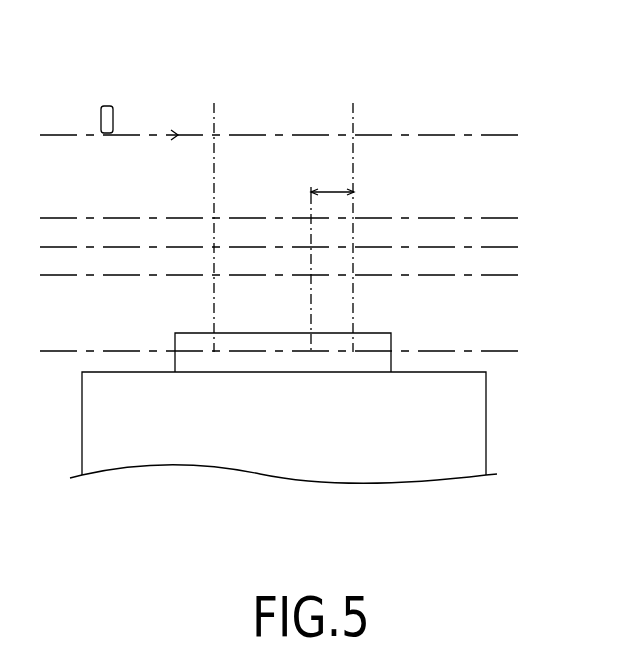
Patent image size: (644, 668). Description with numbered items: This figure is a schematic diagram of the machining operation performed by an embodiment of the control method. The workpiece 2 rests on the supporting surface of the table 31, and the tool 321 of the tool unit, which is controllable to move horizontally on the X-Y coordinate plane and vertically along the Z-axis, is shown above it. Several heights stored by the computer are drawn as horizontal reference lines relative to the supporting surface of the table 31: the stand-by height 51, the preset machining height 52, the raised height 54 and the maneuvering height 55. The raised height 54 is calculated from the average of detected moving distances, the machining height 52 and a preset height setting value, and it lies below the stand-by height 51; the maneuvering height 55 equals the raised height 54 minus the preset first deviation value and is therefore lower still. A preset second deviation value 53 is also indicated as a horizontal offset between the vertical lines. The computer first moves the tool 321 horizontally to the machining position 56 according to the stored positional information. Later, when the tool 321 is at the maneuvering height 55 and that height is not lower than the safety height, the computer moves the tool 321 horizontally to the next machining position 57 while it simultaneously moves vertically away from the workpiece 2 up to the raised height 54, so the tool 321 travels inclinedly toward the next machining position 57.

The tool 321 is at (107, 121).
The machining position 56 is at (214, 120).
The next machining position 57 is at (353, 120).
The preset second deviation value 53 is at (333, 192).
The stand-by height 51 is at (517, 218).
The raised height 54 is at (517, 247).
The maneuvering height 55 is at (517, 275).
The preset machining height 52 is at (517, 351).
The workpiece 2 is at (376, 342).
The table 31 is at (467, 425).